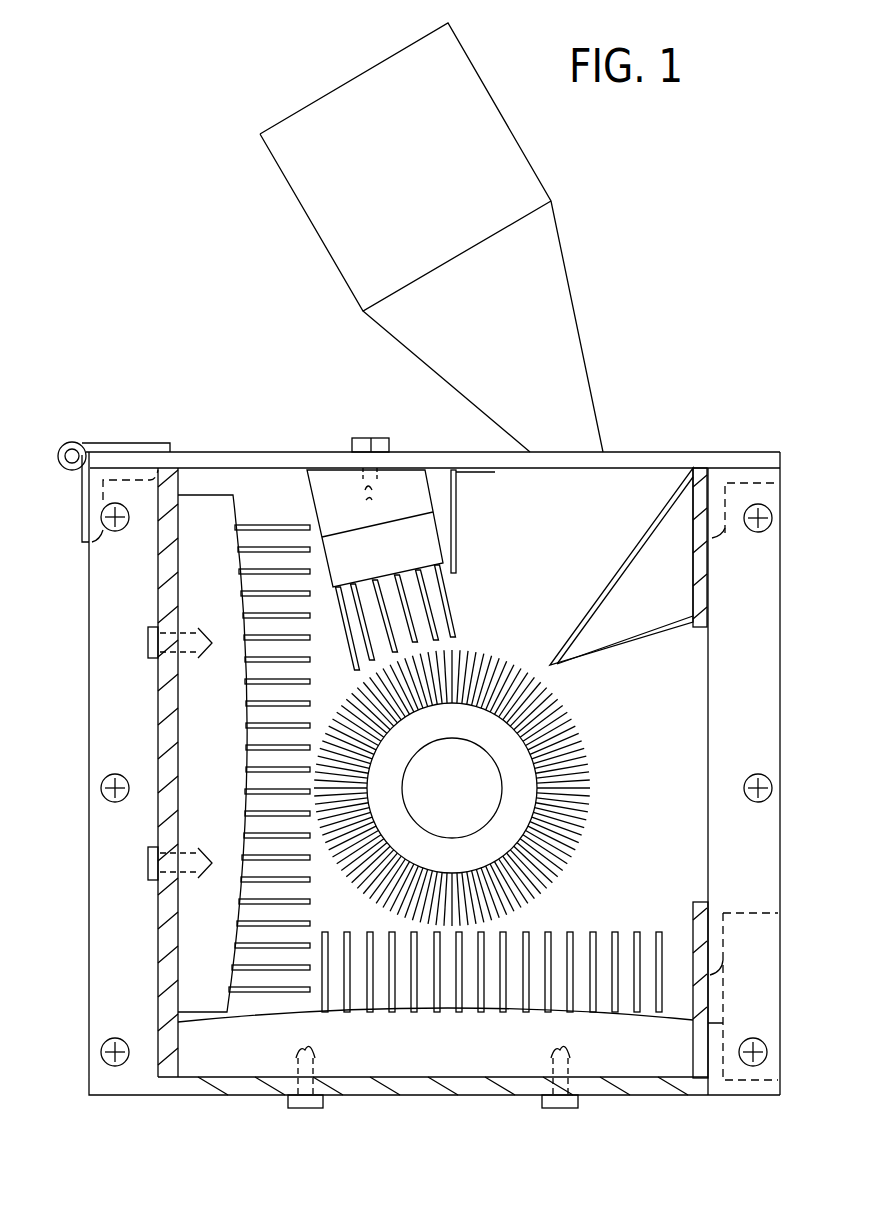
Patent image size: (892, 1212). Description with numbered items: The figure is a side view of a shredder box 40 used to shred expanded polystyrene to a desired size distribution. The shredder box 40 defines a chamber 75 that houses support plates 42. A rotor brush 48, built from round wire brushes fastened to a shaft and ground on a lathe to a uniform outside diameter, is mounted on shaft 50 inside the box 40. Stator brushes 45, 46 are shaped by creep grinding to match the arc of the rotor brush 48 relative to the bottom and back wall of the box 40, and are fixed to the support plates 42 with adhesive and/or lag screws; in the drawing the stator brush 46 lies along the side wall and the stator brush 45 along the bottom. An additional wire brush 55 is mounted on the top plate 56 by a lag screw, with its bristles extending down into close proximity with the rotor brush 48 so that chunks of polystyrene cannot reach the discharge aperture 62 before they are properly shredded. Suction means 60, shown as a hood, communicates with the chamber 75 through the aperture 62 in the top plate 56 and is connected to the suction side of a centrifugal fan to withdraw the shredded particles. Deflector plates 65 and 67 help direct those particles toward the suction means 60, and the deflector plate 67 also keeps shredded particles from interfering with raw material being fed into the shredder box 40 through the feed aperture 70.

The shredder box 40 is at (178, 458).
The support plates 42 is at (170, 912).
The stator brush 45 is at (503, 1060).
The stator brush 46 is at (192, 712).
The rotor brush 48 is at (570, 750).
The shaft 50 is at (480, 727).
The wire brush 55 is at (358, 545).
The top plate 56 is at (695, 460).
The suction means 60 is at (564, 317).
The discharge aperture 62 is at (557, 462).
The deflector plate 65 is at (455, 497).
The deflector plate 67 is at (608, 592).
The feed aperture 70 is at (775, 750).
The chamber 75 is at (607, 505).